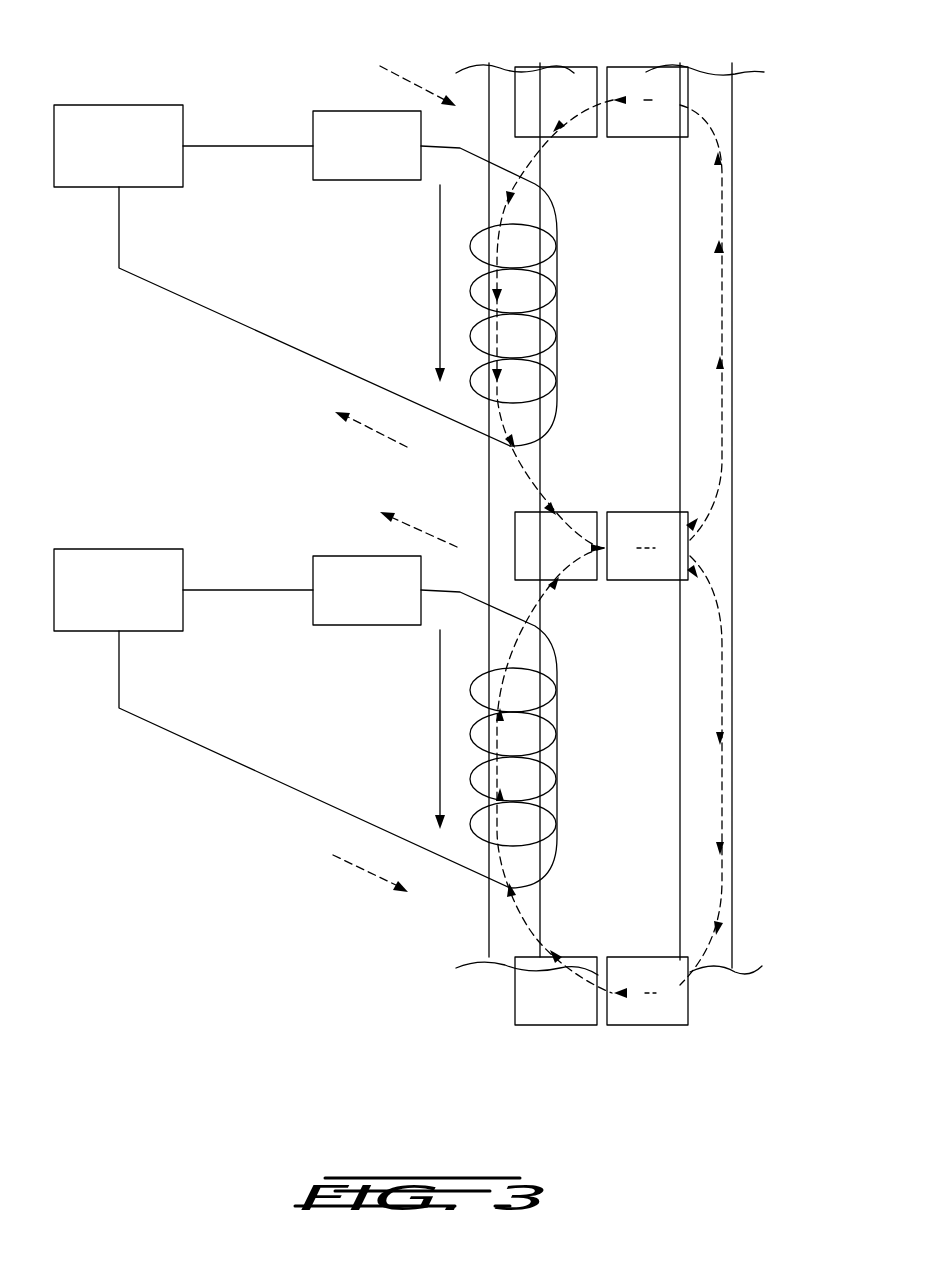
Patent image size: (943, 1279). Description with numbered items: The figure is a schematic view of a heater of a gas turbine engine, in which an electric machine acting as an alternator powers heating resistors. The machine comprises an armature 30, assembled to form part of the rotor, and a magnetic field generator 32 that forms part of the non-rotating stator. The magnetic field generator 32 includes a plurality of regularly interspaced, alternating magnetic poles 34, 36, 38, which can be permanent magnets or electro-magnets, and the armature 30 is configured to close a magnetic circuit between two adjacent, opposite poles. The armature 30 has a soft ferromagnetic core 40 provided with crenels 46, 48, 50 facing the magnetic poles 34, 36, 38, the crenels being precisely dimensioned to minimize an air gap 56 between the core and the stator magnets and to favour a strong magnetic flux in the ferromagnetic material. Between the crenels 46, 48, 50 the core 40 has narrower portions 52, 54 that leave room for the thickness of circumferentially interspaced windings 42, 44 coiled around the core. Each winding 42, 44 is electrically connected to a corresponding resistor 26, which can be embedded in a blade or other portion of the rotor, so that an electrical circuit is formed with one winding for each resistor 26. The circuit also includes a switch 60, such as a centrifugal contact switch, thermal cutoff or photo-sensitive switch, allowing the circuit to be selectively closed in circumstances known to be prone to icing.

The resistor 26 is at (122, 105).
The switch 60 is at (341, 111).
The armature 30 is at (572, 1022).
The magnetic field generator 32 is at (725, 1022).
The magnetic pole 34 is at (688, 93).
The magnetic pole 36 is at (688, 548).
The magnetic pole 38 is at (648, 968).
The soft ferromagnetic core 40 is at (530, 325).
The winding 42 is at (560, 268).
The winding 44 is at (560, 715).
The crenel 46 is at (575, 138).
The crenel 48 is at (575, 582).
The crenel 50 is at (515, 990).
The narrower portion 52 is at (527, 380).
The narrower portion 54 is at (528, 815).
The air gap 56 is at (601, 985).